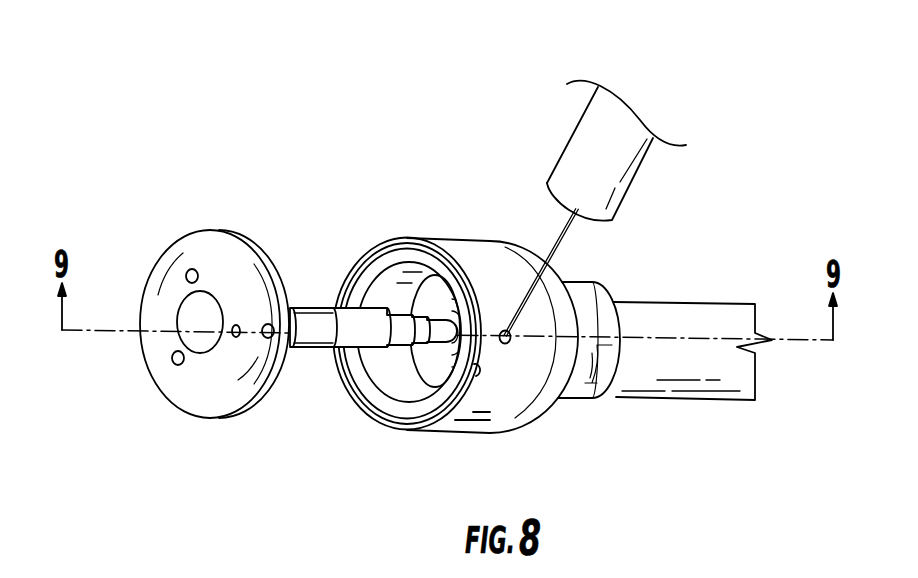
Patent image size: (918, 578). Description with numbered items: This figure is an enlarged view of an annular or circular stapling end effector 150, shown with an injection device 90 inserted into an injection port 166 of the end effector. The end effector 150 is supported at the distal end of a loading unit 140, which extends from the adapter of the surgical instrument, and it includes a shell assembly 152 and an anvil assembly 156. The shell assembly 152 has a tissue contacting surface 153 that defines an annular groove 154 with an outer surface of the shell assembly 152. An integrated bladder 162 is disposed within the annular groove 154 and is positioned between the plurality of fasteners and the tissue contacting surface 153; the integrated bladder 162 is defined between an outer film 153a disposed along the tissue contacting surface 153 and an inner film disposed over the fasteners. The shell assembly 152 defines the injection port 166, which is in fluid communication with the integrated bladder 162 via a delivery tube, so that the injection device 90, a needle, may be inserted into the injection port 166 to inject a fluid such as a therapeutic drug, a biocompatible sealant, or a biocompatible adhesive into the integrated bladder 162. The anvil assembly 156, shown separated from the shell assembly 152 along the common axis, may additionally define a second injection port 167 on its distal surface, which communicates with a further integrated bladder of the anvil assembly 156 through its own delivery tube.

The end effector 150 is at (408, 92).
The injection device 90 is at (551, 143).
The anvil assembly 156 is at (209, 218).
The second injection port 167 is at (269, 324).
The outer film 153a is at (352, 264).
The annular groove 154 is at (416, 238).
The shell assembly 152 is at (482, 228).
The loading unit 140 is at (723, 278).
The integrated bladder 162 is at (365, 392).
The tissue contacting surface 153 is at (330, 384).
The injection port 166 is at (506, 345).